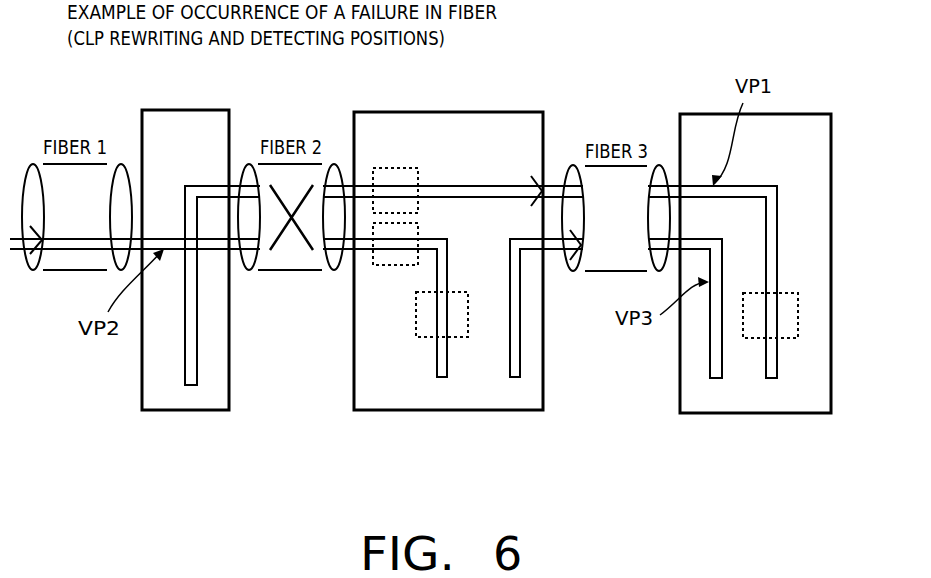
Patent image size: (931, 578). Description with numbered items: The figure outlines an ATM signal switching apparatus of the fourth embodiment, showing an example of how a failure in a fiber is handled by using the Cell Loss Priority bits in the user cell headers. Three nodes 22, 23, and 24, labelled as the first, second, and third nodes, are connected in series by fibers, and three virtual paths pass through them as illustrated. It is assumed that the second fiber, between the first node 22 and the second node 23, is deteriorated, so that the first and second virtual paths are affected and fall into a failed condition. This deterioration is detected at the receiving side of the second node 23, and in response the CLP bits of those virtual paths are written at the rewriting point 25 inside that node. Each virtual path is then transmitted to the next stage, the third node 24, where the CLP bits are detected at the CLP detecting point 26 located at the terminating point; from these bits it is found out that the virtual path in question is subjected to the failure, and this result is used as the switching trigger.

The node 22 is at (170, 410).
The node 23 is at (383, 410).
The node 24 is at (750, 413).
The rewriting point 25 is at (419, 229).
The CLP detecting point 26 is at (457, 340).